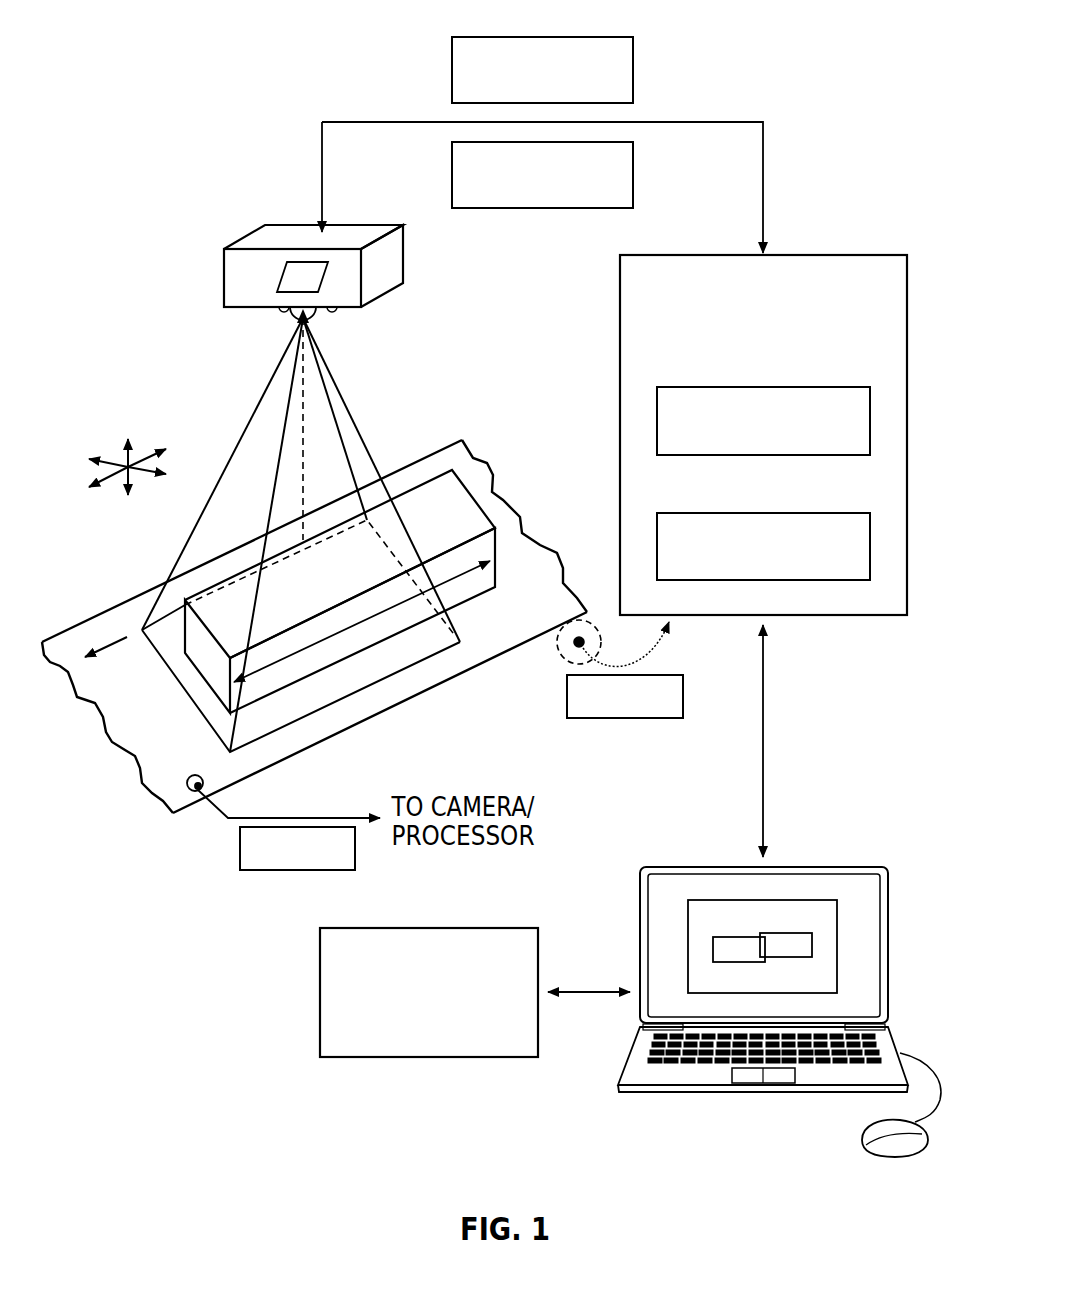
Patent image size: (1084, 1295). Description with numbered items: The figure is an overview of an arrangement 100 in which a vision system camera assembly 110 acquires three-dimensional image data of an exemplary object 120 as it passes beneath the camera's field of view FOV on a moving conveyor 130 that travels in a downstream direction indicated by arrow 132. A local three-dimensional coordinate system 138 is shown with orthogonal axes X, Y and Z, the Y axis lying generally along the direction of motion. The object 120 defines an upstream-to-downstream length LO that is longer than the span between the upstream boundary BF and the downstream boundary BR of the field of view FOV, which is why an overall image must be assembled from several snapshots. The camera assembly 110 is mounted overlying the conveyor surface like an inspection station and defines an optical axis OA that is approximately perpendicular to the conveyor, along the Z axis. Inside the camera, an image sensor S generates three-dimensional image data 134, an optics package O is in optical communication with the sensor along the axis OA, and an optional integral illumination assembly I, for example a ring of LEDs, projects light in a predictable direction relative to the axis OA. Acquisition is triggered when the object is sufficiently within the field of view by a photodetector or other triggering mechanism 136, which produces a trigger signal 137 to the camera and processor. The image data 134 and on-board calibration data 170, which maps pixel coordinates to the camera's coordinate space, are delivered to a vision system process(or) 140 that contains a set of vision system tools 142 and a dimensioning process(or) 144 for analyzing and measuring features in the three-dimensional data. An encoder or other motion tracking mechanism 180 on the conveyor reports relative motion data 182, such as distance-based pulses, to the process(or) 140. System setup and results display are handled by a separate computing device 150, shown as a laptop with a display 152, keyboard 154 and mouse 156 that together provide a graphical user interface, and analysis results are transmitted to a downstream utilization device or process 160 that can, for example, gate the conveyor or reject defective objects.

The arrangement 100 is at (284, 93).
The vision system camera assembly 110 is at (377, 266).
The object 120 is at (458, 510).
The conveyor 130 is at (147, 740).
The downstream direction arrow 132 is at (107, 642).
The 3D image data 134 is at (573, 37).
The photodetector or triggering mechanism 136 is at (187, 789).
The trigger signal 137 is at (295, 870).
The local/relative 3D coordinate system 138 is at (121, 430).
The vision system process(or) 140 is at (764, 420).
The vision system tools 142 is at (808, 387).
The dimensioning process(or) 144 is at (808, 513).
The computing device 150 is at (791, 1000).
The display or touchscreen 152 is at (828, 933).
The keyboard 154 is at (848, 1040).
The mouse 156 is at (878, 1130).
The utilization device or process 160 is at (479, 928).
The calibration data 170 is at (570, 208).
The encoder or motion tracking mechanism 180 is at (560, 655).
The motion data 182 is at (610, 718).
The optics package O is at (300, 313).
The integral illumination assembly I is at (277, 312).
The upstream boundary of the field of view BF is at (254, 400).
The optical axis OA is at (304, 422).
The downstream boundary of the field of view BR is at (405, 472).
The length of the object LO is at (397, 607).
The field of view FOV is at (341, 702).
The z-axis Z is at (132, 455).
The y-axis Y is at (108, 478).
The x-axis X is at (143, 475).